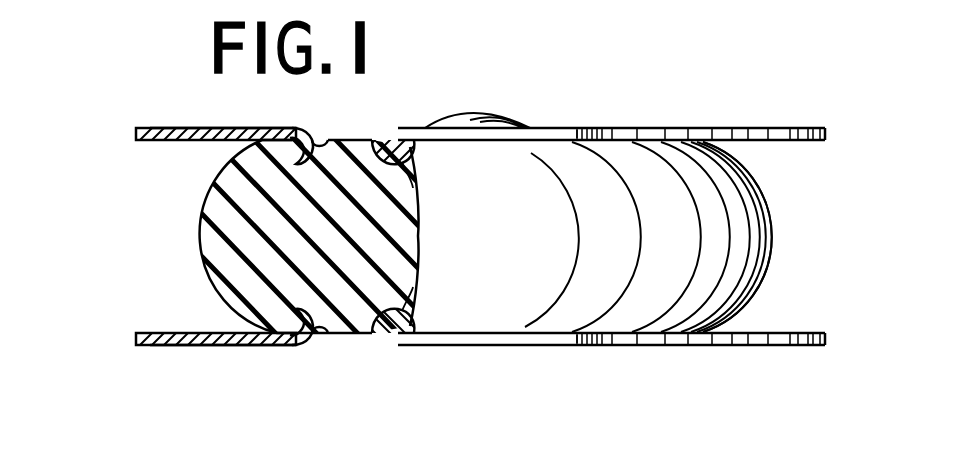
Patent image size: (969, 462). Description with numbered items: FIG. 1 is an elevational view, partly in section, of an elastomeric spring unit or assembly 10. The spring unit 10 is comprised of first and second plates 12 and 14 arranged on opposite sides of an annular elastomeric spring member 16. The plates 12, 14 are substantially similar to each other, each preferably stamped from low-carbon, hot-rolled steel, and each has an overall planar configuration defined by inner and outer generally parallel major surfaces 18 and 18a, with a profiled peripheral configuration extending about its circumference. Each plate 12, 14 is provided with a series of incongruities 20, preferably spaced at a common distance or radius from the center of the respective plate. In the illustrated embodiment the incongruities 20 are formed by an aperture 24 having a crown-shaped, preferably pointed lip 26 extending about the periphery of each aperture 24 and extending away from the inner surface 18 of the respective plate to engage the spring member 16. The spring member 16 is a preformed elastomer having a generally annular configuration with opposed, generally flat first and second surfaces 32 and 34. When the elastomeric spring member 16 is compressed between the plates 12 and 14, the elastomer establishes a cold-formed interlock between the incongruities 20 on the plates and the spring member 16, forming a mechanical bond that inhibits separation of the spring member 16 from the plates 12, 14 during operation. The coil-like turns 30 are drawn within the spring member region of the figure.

The elastomeric spring unit 10 is at (134, 126).
The first plate 12 is at (748, 128).
The second plate 14 is at (740, 346).
The elastomeric spring member 16 is at (776, 257).
The inner major surface 18 is at (157, 141).
The outer major surface 18a is at (180, 127).
The incongruities 20 is at (388, 128).
The aperture 24 is at (325, 140).
The lip 26 is at (413, 188).
The coil turns 30 is at (723, 283).
The first surface 32 is at (612, 128).
The second surface 34 is at (615, 346).